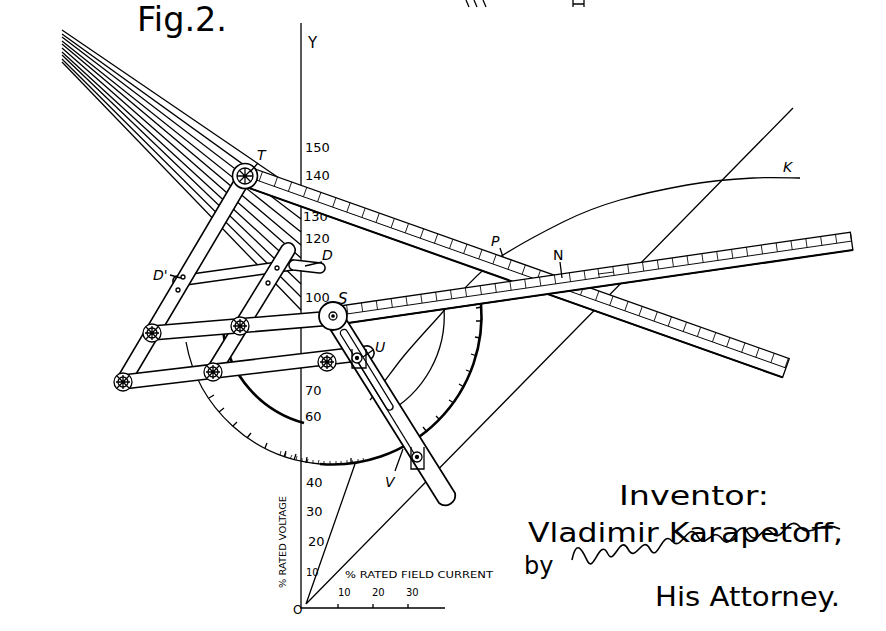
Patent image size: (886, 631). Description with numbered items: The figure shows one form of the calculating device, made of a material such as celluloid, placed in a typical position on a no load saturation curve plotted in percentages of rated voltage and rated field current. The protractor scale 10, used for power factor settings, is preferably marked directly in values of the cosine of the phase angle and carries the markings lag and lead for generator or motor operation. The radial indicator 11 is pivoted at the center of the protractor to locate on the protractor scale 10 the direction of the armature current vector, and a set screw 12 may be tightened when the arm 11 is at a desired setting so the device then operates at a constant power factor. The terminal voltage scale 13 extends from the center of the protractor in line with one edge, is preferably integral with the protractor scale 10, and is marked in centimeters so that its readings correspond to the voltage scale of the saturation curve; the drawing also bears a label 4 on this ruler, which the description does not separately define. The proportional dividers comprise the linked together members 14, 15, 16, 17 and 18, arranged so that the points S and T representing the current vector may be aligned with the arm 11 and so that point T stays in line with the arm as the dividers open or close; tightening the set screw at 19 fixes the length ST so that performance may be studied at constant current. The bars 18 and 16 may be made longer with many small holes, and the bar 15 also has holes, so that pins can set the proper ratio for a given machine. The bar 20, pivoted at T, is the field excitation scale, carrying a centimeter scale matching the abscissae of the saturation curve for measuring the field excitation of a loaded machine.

The graduated ruler pivoted at S 4 is at (636, 265).
The protractor scale 10 is at (190, 353).
The radial indicator 11 is at (437, 483).
The set screw 12 is at (423, 455).
The terminal voltage scale 13 is at (605, 272).
The proportional divider member 14 is at (170, 378).
The proportional divider member 15 is at (133, 355).
The proportional divider member 16 is at (262, 298).
The proportional divider member 17 is at (193, 328).
The proportional divider member 18 is at (210, 278).
The set screw 19 is at (358, 372).
The field excitation scale bar 20 is at (412, 228).